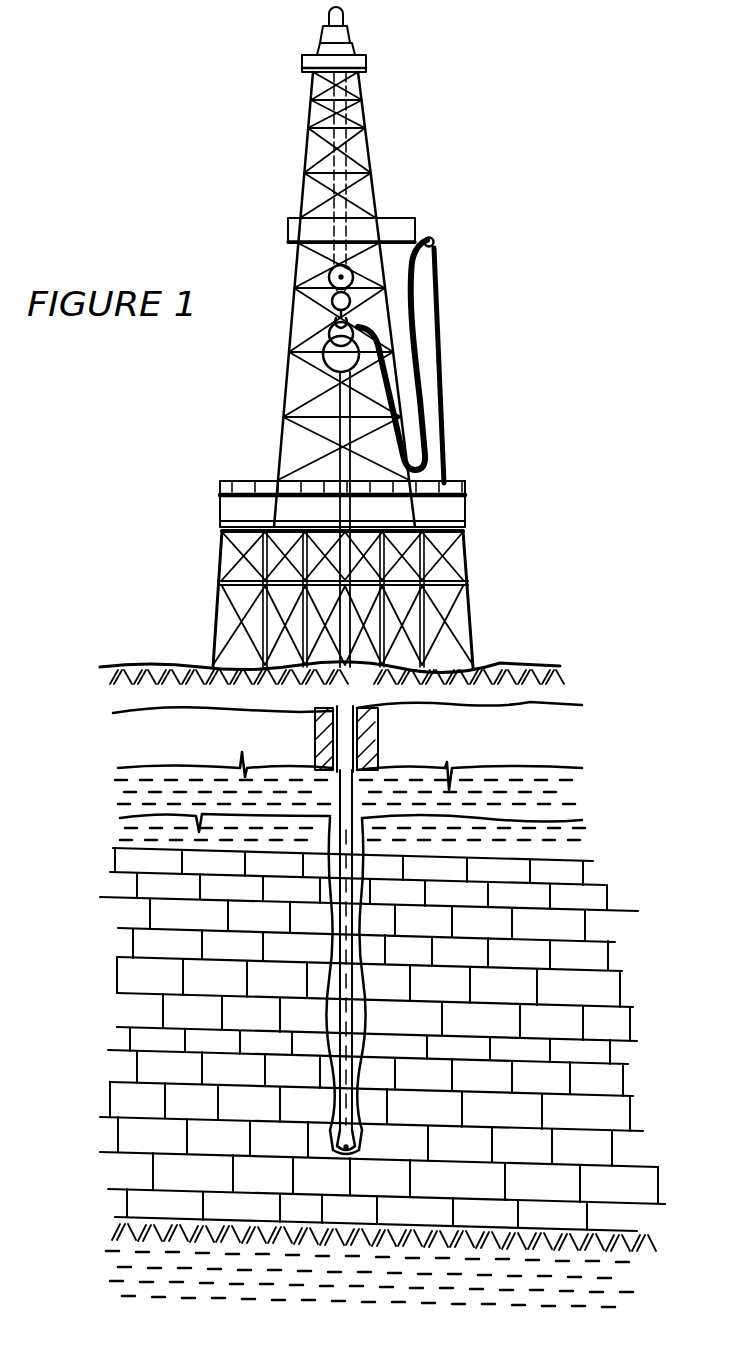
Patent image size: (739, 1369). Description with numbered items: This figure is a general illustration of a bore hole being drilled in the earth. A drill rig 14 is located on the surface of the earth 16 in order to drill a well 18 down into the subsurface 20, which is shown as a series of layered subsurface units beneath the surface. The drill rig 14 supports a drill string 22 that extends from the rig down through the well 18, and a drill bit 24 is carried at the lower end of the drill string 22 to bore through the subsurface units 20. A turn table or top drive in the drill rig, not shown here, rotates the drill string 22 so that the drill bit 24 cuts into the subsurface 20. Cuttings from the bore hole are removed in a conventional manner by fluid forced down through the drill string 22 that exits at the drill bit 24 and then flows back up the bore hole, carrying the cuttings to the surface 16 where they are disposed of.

The drill rig 14 is at (414, 143).
The surface of the earth 16 is at (116, 666).
The well 18 is at (386, 740).
The subsurface 20 is at (588, 744).
The drill string 22 is at (350, 970).
The drill bit 24 is at (354, 1128).